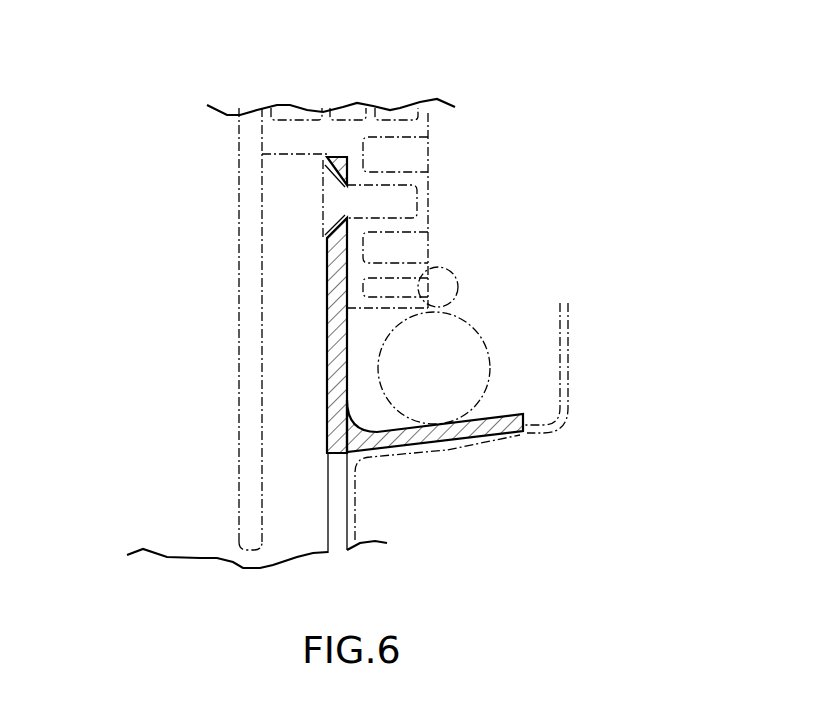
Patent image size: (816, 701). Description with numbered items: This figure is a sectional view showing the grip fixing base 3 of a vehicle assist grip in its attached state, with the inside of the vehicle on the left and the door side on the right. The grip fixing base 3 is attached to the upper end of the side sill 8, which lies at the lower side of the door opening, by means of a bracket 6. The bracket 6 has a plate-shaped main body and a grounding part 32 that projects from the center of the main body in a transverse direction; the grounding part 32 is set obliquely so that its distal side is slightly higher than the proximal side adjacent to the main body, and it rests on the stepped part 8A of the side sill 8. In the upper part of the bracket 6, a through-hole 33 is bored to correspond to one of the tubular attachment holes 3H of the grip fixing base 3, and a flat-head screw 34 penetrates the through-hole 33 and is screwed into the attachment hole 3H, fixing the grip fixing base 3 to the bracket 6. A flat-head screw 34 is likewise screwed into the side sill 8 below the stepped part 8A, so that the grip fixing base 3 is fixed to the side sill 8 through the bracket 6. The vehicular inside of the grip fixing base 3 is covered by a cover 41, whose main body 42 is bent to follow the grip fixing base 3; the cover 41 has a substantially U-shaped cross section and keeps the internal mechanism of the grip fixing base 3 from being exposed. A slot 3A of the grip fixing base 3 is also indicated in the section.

The grip fixing base 3 is at (428, 120).
The attachment hole 3H is at (400, 182).
The slot of body 3A is at (408, 265).
The bracket 6 is at (328, 509).
The side sill 8 is at (570, 337).
The stepped part 8A is at (447, 450).
The grounding part 32 is at (492, 423).
The through-hole 33 is at (344, 157).
The flat-head screw 34 is at (323, 183).
The cover 41 is at (234, 417).
The main body 42 is at (247, 515).